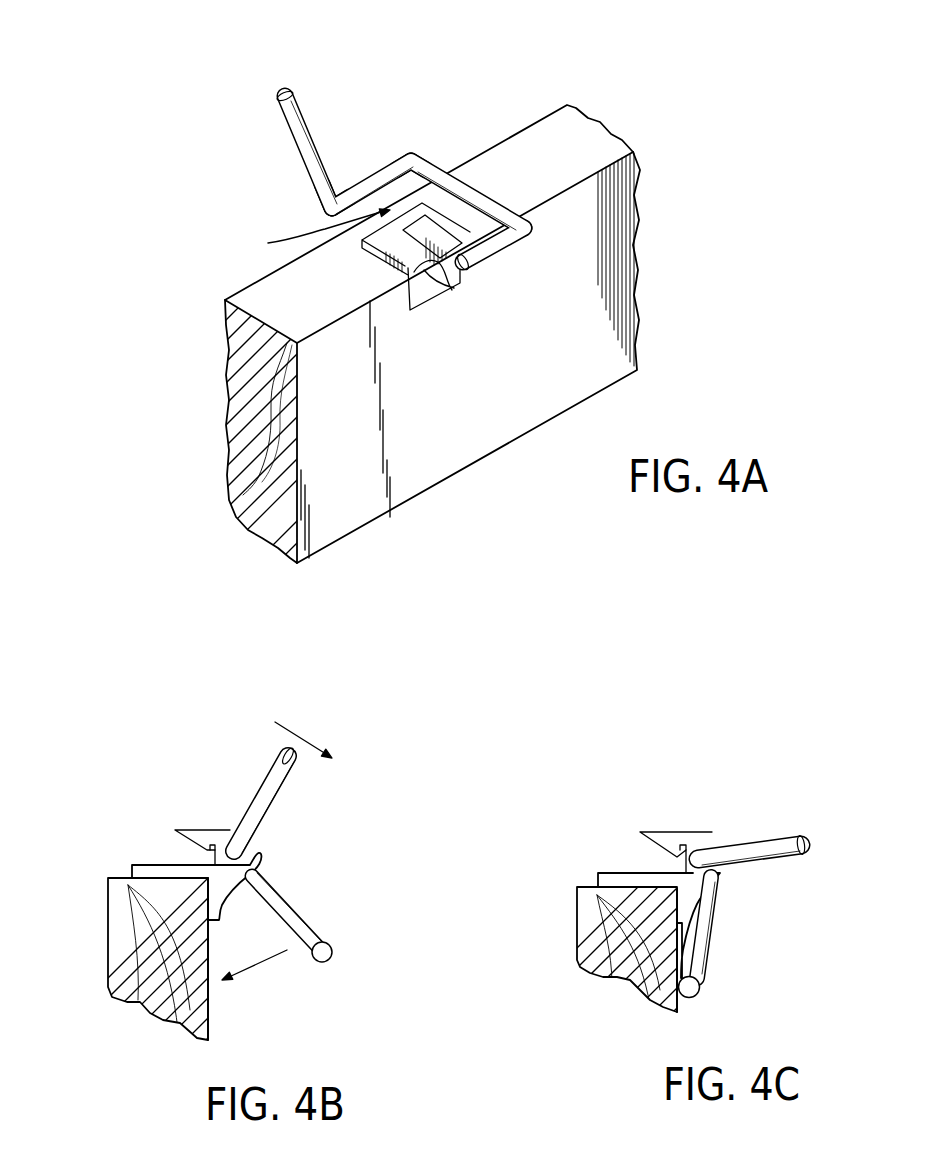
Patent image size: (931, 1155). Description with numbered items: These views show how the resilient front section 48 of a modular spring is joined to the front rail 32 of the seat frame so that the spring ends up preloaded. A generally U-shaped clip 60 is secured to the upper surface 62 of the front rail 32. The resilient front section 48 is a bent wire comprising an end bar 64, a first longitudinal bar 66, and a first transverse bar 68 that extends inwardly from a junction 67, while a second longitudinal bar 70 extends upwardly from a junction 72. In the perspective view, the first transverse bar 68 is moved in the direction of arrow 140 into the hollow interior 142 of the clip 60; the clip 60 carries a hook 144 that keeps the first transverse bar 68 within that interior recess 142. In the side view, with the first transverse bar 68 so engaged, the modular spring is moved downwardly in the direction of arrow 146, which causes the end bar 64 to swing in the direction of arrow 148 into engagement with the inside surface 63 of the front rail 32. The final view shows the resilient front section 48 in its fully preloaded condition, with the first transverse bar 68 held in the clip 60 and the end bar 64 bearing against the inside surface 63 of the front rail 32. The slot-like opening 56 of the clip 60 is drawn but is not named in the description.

In FIG. 4A, the front rail 32 is at (377, 342).
In FIG. 4A, the resilient front section 48 is at (402, 155).
In FIG. 4A, the slot / aperture 56 is at (457, 273).
In FIG. 4A, the clip 60 is at (416, 284).
In FIG. 4B, the clip 60 is at (185, 837).
In FIG. 4C, the clip 60 is at (671, 866).
In FIG. 4A, the upper surface 62 is at (320, 297).
In FIG. 4B, the upper surface 62 is at (110, 877).
In FIG. 4C, the upper surface 62 is at (580, 886).
In FIG. 4A, the inside surface 63 is at (454, 421).
In FIG. 4B, the inside surface 63 is at (209, 948).
In FIG. 4C, the inside surface 63 is at (682, 1003).
In FIG. 4A, the end bar 64 is at (521, 246).
In FIG. 4B, the end bar 64 is at (337, 935).
In FIG. 4C, the end bar 64 is at (707, 988).
In FIG. 4A, the first longitudinal bar 66 is at (482, 200).
In FIG. 4B, the first longitudinal bar 66 is at (295, 907).
In FIG. 4C, the first longitudinal bar 66 is at (705, 938).
In FIG. 4A, the junction 67 is at (411, 152).
In FIG. 4A, the first transverse bar 68 is at (362, 180).
In FIG. 4A, the second longitudinal bar 70 is at (292, 121).
In FIG. 4B, the second longitudinal bar 70 is at (258, 814).
In FIG. 4C, the second longitudinal bar 70 is at (746, 838).
In FIG. 4A, the junction 72 is at (322, 215).
In FIG. 4A, the arrow 140 is at (309, 234).
In FIG. 4A, the hollow interior 142 is at (412, 270).
In FIG. 4B, the hollow interior 142 is at (214, 846).
In FIG. 4C, the hollow interior 142 is at (688, 850).
In FIG. 4B, the hook 144 is at (192, 832).
In FIG. 4C, the hook 144 is at (658, 831).
In FIG. 4B, the arrow 146 is at (303, 736).
In FIG. 4B, the arrow 148 is at (263, 965).